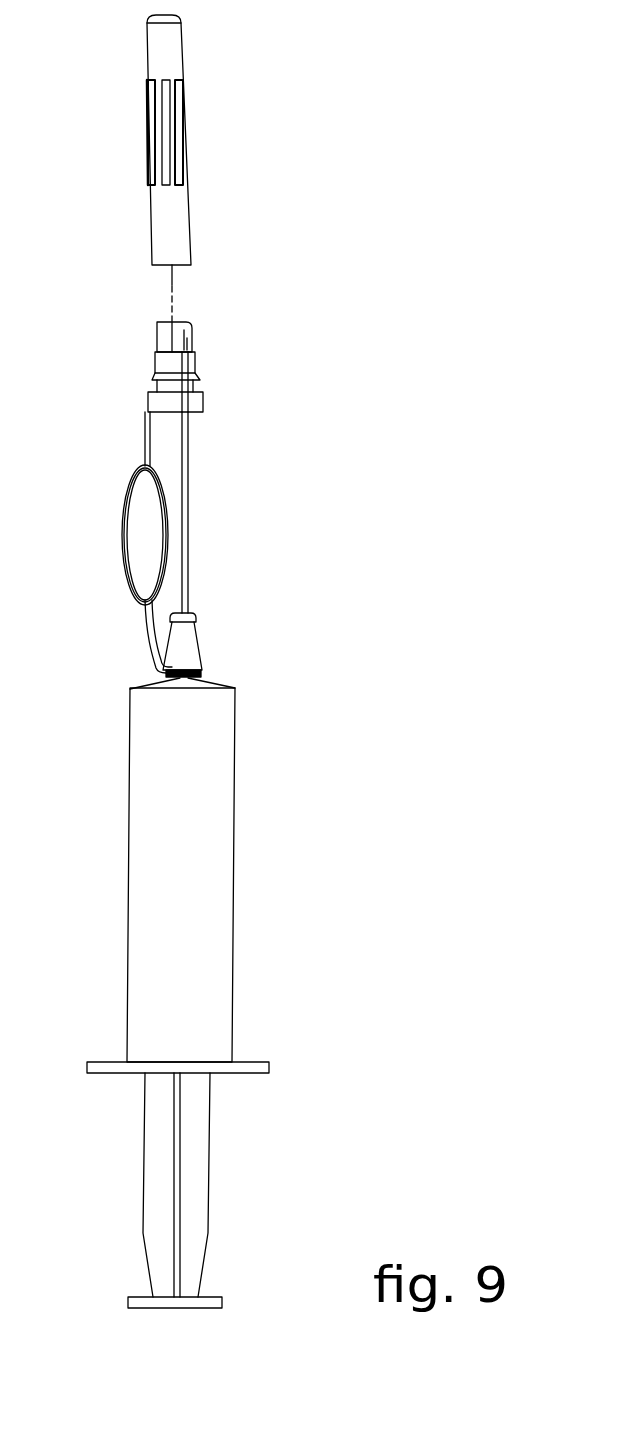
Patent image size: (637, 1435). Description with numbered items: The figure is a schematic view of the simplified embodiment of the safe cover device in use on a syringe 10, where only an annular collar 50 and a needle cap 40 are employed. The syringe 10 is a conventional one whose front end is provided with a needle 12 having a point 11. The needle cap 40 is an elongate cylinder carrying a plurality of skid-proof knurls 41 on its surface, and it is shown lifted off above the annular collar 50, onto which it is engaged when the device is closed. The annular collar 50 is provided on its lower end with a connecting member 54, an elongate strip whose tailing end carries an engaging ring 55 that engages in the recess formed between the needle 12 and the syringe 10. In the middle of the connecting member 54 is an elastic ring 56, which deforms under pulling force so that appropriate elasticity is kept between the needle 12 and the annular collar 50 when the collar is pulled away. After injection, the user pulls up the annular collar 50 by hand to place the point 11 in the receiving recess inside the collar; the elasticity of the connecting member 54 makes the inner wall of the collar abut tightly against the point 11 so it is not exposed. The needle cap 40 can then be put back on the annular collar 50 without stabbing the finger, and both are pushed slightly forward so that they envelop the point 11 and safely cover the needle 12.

The syringe 10 is at (210, 963).
The point 11 is at (185, 503).
The needle 12 is at (190, 647).
The needle cap 40 is at (172, 47).
The skid-proof knurls 41 is at (175, 133).
The annular collar 50 is at (157, 342).
The connecting member 54 is at (153, 432).
The engaging ring 55 is at (188, 680).
The elastic ring 56 is at (130, 543).